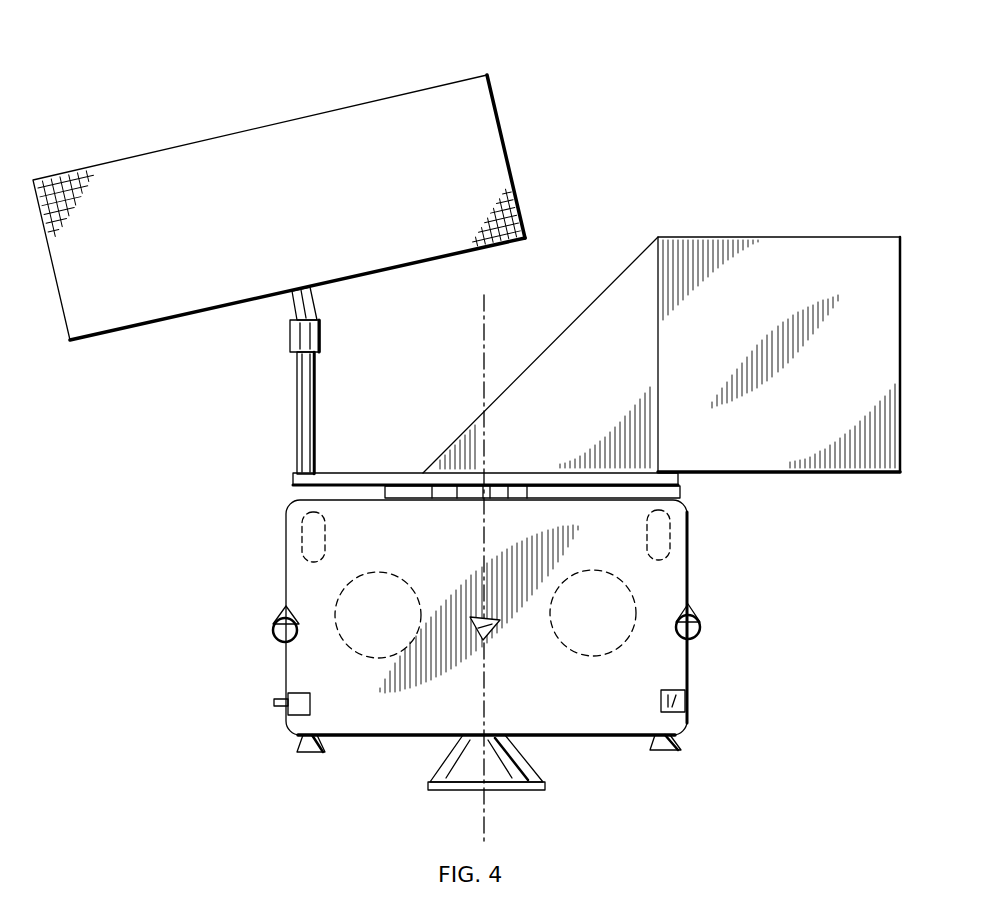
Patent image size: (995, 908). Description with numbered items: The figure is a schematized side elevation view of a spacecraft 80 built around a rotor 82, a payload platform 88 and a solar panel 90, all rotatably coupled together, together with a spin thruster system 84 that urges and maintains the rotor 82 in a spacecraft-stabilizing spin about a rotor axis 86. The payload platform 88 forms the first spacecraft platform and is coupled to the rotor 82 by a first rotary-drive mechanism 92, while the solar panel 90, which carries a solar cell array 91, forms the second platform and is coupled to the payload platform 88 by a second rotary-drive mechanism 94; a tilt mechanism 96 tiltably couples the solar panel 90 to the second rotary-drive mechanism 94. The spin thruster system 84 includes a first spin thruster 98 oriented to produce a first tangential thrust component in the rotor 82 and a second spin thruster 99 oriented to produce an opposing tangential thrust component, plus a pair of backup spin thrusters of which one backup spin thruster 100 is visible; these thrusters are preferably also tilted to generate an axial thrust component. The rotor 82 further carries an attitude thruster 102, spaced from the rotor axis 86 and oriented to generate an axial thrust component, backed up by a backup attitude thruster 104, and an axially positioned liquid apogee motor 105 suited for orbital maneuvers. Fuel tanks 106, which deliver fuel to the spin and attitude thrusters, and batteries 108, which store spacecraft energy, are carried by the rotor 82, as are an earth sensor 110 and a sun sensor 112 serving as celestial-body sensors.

The spacecraft 80 is at (676, 190).
The rotor 82 is at (276, 557).
The spin thruster system 84 is at (240, 635).
The rotor axis 86 is at (486, 569).
The payload platform 88 is at (805, 226).
The solar panel 90 is at (319, 104).
The solar cell array 91 is at (487, 185).
The first rotary-drive mechanism 92 is at (388, 492).
The second rotary-drive mechanism 94 is at (290, 338).
The tilt mechanism 96 is at (312, 303).
The first spin thruster 98 is at (275, 630).
The second spin thruster 99 is at (700, 628).
The backup spin thruster 100 is at (493, 628).
The attitude thruster 102 is at (680, 745).
The backup attitude thruster 104 is at (300, 740).
The liquid apogee motor 105 is at (535, 772).
The fuel tanks 106 is at (598, 572).
The batteries 108 is at (670, 528).
The earth sensor 110 is at (298, 693).
The sun sensor 112 is at (674, 690).